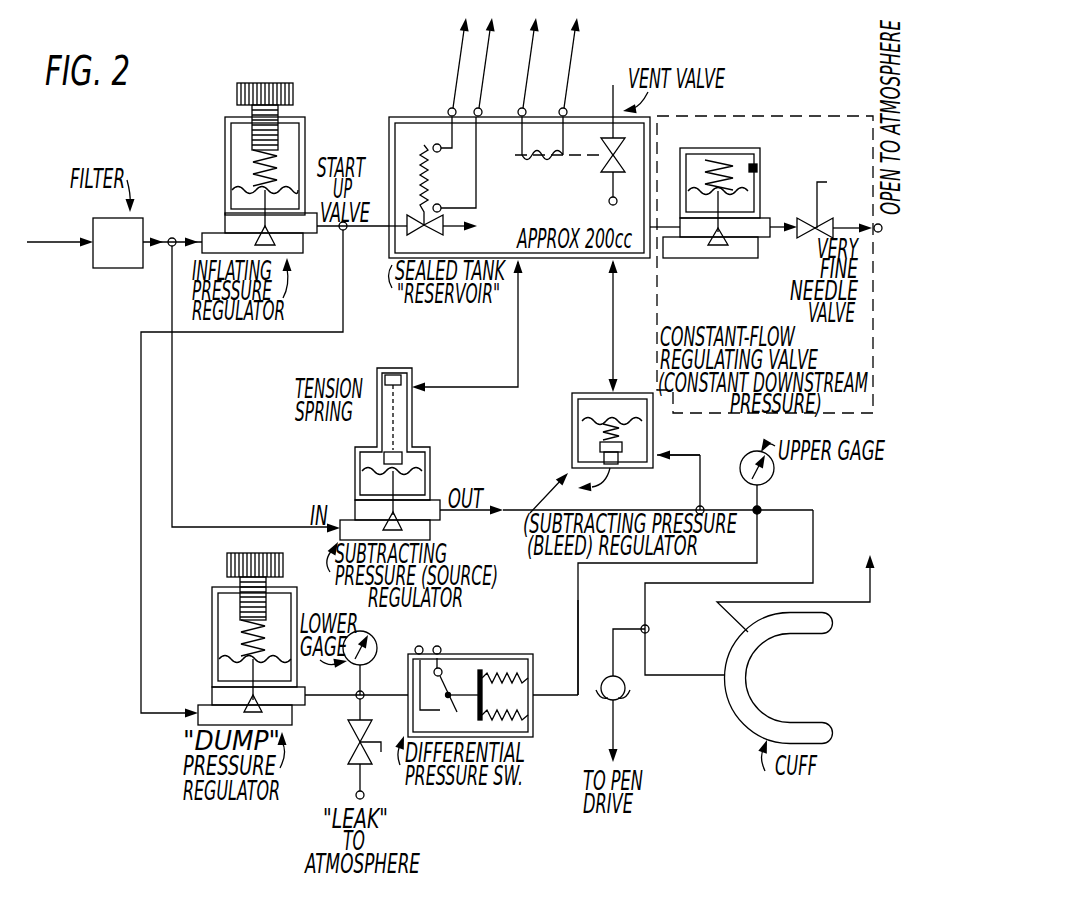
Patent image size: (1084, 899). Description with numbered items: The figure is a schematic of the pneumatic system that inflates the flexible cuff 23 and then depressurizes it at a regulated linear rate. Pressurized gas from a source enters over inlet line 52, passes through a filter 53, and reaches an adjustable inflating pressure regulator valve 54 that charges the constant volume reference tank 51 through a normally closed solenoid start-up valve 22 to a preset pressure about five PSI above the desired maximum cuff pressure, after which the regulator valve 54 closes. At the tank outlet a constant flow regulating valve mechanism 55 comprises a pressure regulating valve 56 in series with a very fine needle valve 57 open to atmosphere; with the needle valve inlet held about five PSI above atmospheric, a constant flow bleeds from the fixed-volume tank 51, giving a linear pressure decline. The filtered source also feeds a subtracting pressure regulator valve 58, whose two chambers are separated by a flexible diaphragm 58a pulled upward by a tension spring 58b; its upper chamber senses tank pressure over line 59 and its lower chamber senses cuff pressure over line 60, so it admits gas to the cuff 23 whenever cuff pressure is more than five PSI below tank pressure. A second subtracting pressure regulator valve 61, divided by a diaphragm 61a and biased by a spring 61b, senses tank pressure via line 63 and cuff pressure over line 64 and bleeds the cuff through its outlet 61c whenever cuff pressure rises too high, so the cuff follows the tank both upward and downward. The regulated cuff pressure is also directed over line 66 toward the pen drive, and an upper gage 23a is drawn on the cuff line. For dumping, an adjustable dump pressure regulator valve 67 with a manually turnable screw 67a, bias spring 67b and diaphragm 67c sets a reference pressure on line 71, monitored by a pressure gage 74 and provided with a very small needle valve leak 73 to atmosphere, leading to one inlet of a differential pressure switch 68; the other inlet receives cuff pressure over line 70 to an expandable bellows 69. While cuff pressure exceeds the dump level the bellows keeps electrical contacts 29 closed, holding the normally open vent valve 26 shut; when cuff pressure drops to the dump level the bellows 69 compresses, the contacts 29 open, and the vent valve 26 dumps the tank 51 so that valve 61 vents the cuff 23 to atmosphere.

The start-up valve 22 is at (445, 218).
The cuff 23 is at (742, 703).
The upper gage 23a is at (767, 480).
The vent valve 26 is at (609, 135).
The electrical contacts 29 is at (347, 232).
The reference tank 51 is at (510, 116).
The inlet line 52 is at (52, 246).
The filter 53 is at (132, 222).
The inflating pressure regulator valve 54 is at (225, 140).
The constant flow regulating valve mechanism 55 is at (823, 115).
The pressure regulating valve 56 is at (773, 142).
The needle valve 57 is at (829, 222).
The subtracting pressure regulator valve 58 is at (390, 446).
The diaphragm 58a is at (365, 487).
The tension spring 58b is at (411, 372).
The line 59 is at (519, 338).
The line 60 is at (507, 493).
The second subtracting pressure regulator valve 61 is at (621, 435).
The diaphragm 61a is at (600, 414).
The spring 61b is at (650, 428).
The outlet 61c is at (632, 470).
The line 63 is at (612, 331).
The line 64 is at (678, 585).
The line 66 is at (615, 723).
The dump pressure regulator valve 67 is at (230, 638).
The screw 67a is at (228, 566).
The bias spring 67b is at (240, 638).
The diaphragm 67c is at (240, 663).
The differential pressure switch 68 is at (479, 679).
The bellows 69 is at (512, 718).
The line 70 is at (580, 660).
The line 71 is at (338, 712).
The needle valve leak 73 is at (354, 742).
The pressure gage 74 is at (375, 657).